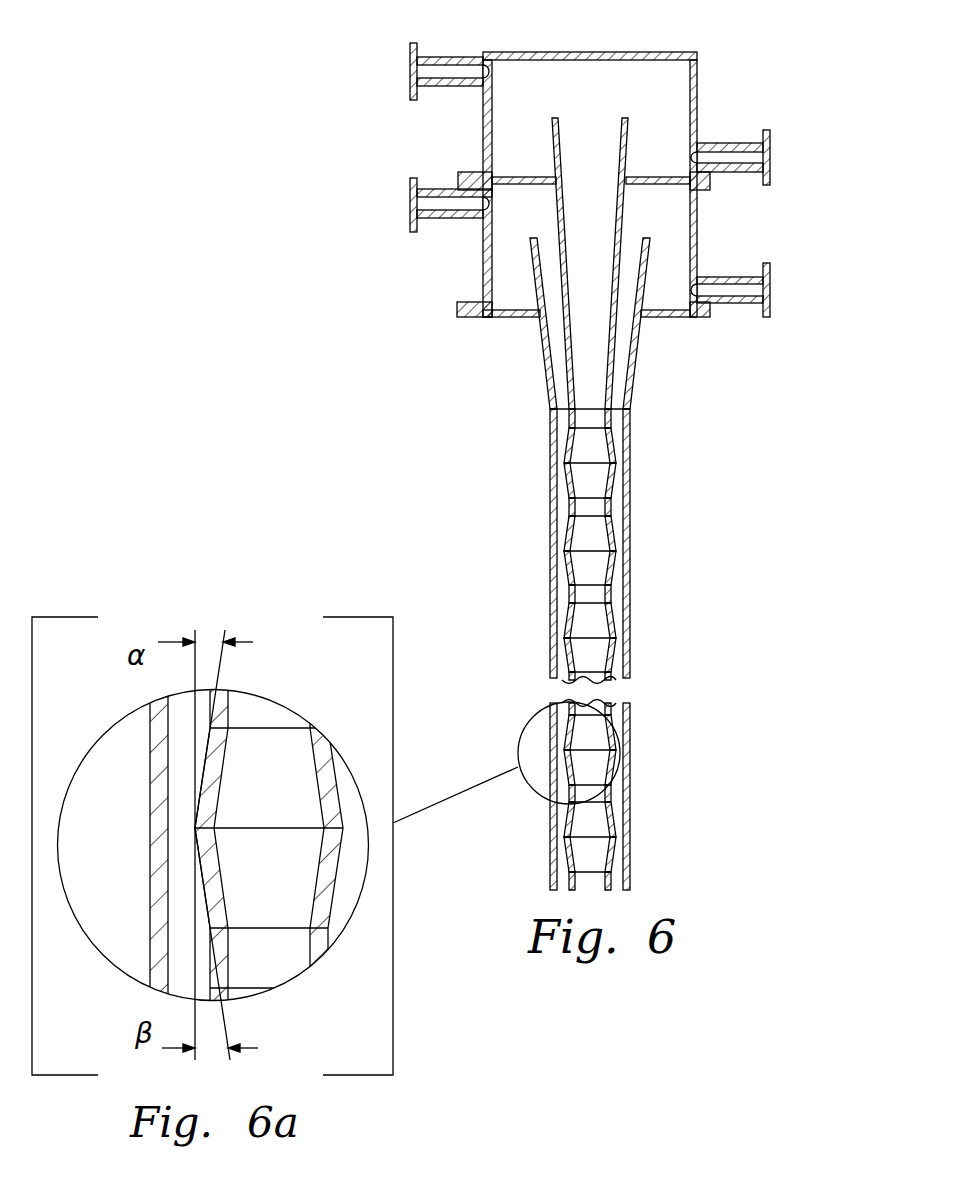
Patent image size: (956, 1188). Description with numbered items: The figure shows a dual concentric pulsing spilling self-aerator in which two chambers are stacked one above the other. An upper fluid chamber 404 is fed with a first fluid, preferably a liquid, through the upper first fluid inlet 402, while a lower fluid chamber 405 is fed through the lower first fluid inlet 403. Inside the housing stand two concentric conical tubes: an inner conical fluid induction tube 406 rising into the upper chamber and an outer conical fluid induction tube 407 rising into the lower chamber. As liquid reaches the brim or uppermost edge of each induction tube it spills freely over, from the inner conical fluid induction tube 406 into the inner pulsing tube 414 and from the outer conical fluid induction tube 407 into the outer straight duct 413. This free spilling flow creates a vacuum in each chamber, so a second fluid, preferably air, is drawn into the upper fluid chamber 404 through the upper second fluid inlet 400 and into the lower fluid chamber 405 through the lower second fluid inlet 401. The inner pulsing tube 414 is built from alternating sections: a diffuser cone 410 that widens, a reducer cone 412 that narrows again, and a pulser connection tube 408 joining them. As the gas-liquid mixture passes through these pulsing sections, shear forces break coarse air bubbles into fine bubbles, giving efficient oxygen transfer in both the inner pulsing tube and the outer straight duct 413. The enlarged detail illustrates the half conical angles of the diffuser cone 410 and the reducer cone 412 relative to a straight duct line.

The upper second fluid inlet 400 is at (412, 72).
The lower second fluid inlet 401 is at (412, 204).
The upper first fluid inlet 402 is at (770, 155).
The lower first fluid inlet 403 is at (770, 287).
The upper fluid chamber 404 is at (698, 105).
The lower fluid chamber 405 is at (483, 254).
The inner conical fluid induction tube 406 is at (593, 504).
The outer conical fluid induction tube 407 is at (541, 564).
The pulser connection tube 408 is at (607, 595).
The diffuser cone 410 is at (567, 535).
The reducer cone 412 is at (605, 657).
The outer straight duct 413 is at (552, 643).
The inner pulsing tube 414 is at (565, 597).